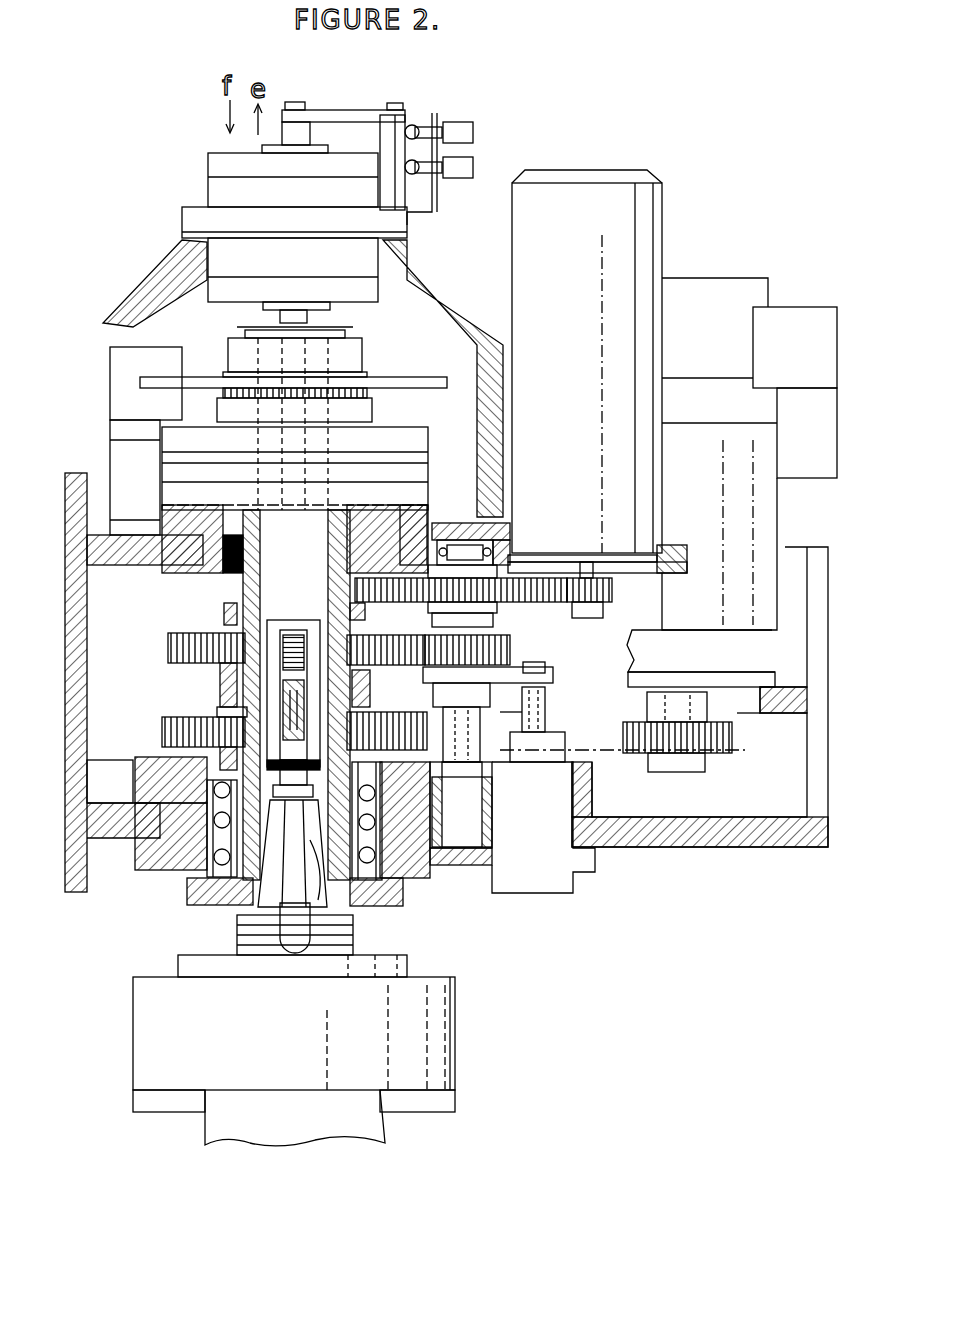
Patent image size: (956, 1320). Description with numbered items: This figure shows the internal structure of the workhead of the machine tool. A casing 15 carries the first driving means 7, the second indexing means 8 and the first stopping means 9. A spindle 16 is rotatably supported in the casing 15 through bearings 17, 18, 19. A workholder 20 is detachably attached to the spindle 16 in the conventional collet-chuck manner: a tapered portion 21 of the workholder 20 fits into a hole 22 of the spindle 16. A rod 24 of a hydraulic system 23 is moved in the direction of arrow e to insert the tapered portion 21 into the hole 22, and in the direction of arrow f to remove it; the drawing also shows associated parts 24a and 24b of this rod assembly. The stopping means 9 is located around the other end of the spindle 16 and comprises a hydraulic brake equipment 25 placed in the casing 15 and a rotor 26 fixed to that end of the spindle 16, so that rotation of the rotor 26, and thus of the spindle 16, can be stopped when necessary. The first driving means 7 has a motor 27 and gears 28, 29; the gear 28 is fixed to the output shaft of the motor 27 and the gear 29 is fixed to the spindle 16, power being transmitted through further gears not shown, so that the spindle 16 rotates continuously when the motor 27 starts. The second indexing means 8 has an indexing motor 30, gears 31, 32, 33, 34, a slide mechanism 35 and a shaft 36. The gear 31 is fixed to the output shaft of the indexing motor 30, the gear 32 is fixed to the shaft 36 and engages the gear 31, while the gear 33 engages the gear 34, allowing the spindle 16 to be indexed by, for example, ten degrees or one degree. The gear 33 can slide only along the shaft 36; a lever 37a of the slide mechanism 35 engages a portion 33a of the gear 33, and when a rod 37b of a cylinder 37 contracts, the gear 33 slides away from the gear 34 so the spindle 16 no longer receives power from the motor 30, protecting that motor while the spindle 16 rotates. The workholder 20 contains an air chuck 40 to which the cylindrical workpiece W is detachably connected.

The first driving means 7 is at (733, 587).
The second indexing means 8 is at (608, 400).
The first stopping means 9 is at (195, 335).
The casing 15 is at (673, 842).
The spindle 16 is at (365, 907).
The bearing 17 is at (203, 873).
The bearing 18 is at (207, 827).
The bearing 19 is at (203, 797).
The workholder 20 is at (407, 960).
The tapered portion 21 is at (273, 888).
The hole 22 is at (343, 930).
The hydraulic system 23 is at (230, 190).
The rod 24 is at (300, 135).
The piston rod 24a is at (298, 515).
The sleeve 24b is at (227, 627).
The hydraulic brake equipment 25 is at (125, 383).
The rotor 26 is at (415, 390).
The motor 27 is at (737, 690).
The gear 28 is at (732, 750).
The gear 29 is at (162, 732).
The indexing motor 30 is at (642, 512).
The gear 31 is at (610, 593).
The gear 32 is at (508, 557).
The gear 33 is at (500, 635).
The portion of the gear 33a is at (493, 657).
The gear 34 is at (172, 633).
The slide mechanism 35 is at (477, 815).
The shaft 36 is at (435, 720).
The cylinder 37 is at (552, 872).
The lever 37a is at (550, 677).
The rod 37b is at (537, 710).
The air chuck 40 is at (455, 1035).
The workpiece W is at (367, 1130).